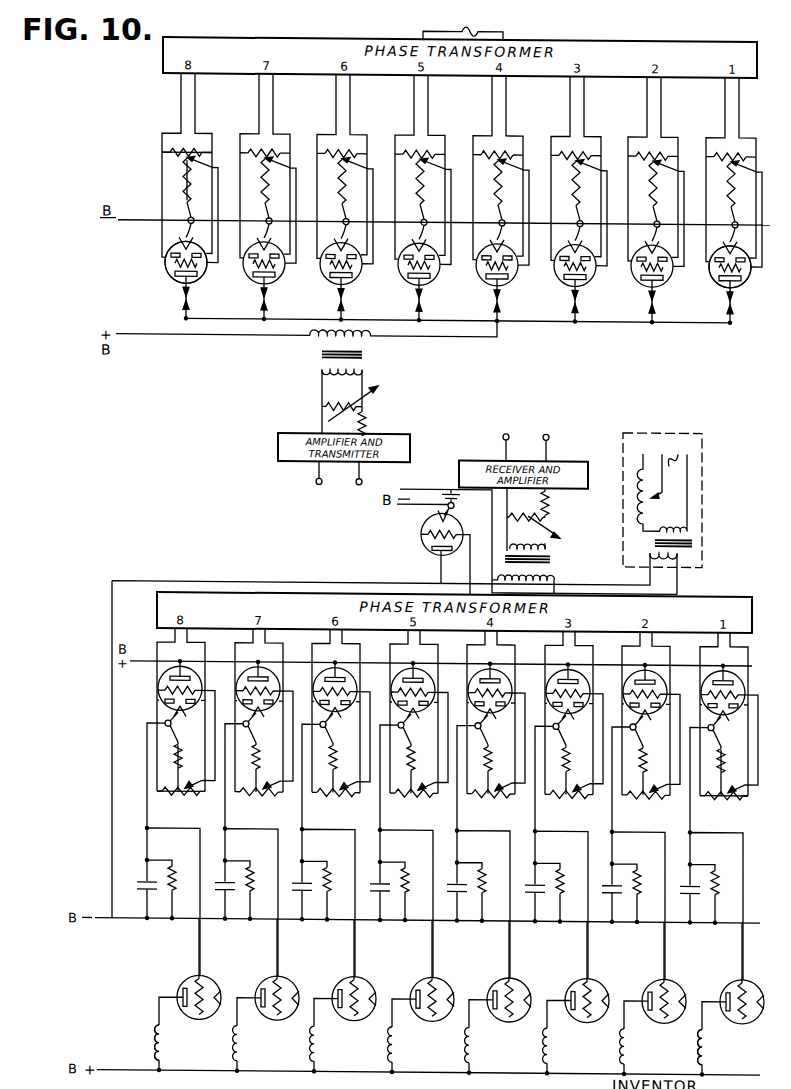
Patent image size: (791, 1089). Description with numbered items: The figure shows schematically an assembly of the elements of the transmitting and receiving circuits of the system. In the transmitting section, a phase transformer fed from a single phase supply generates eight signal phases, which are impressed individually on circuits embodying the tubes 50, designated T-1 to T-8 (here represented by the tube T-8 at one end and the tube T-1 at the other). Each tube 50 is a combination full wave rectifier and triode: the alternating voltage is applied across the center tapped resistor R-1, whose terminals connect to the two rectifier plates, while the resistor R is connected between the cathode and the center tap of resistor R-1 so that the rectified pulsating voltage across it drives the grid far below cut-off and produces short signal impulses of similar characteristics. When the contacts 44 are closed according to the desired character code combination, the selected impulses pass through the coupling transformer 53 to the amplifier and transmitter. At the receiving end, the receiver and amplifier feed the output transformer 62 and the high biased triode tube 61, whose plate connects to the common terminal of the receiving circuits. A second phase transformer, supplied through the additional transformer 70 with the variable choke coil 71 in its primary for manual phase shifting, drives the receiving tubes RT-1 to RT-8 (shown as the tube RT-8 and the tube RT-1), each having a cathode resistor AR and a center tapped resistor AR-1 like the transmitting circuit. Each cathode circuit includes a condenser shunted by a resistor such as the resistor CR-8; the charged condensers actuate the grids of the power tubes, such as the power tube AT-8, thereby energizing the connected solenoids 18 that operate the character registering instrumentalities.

The thermionic tube 50 is at (167, 263).
The relay contacts 44 is at (183, 297).
The coupling transformer 53 is at (366, 352).
The triode thermionic tube 61 is at (421, 537).
The output transformer 62 is at (558, 555).
The additional transformer 70 is at (677, 501).
The variable inductance choke coil 71 is at (648, 506).
The solenoids 18 is at (156, 1042).
The center tapped resistor R-1 is at (450, 148).
The resistor R is at (457, 184).
The transmitting tube T-8 is at (167, 272).
The transmitting tube T-1 is at (711, 272).
The receiving tube RT-8 is at (160, 682).
The receiving tube RT-1 is at (703, 688).
The cathode resistor AR is at (449, 767).
The center tapped resistor AR-1 is at (452, 806).
The shunted resistor CR-8 is at (188, 860).
The power tube AT-8 is at (192, 978).